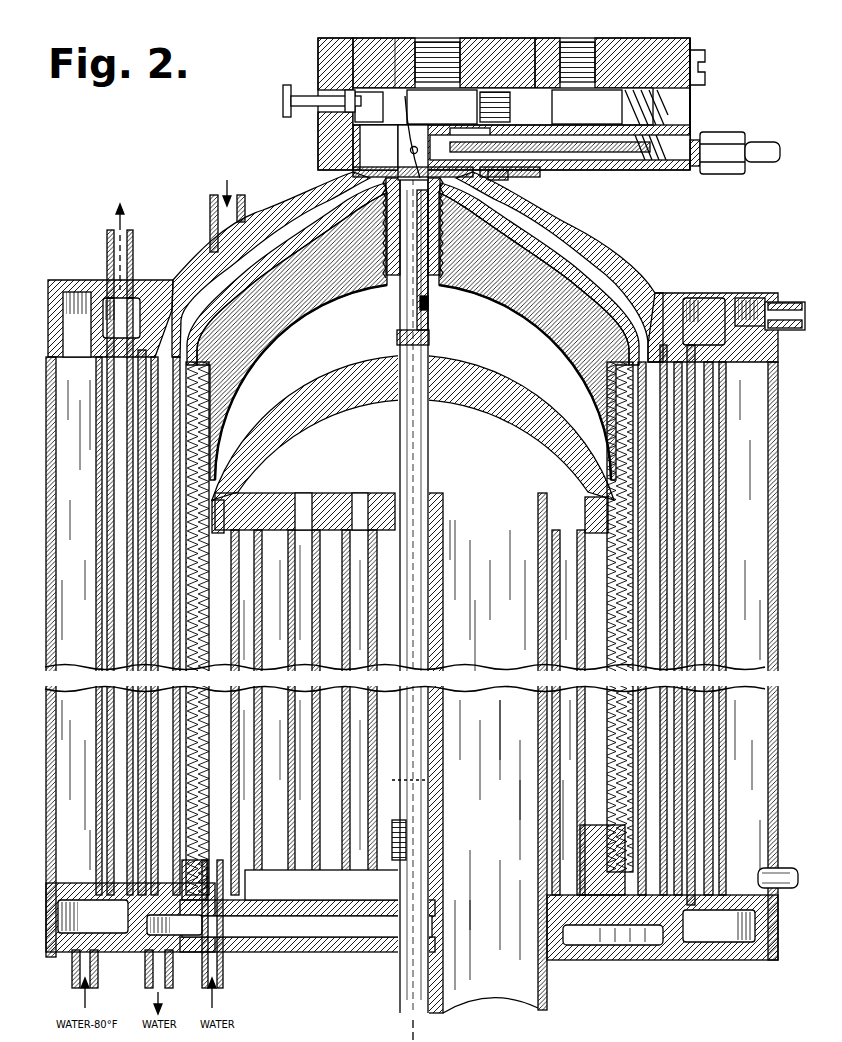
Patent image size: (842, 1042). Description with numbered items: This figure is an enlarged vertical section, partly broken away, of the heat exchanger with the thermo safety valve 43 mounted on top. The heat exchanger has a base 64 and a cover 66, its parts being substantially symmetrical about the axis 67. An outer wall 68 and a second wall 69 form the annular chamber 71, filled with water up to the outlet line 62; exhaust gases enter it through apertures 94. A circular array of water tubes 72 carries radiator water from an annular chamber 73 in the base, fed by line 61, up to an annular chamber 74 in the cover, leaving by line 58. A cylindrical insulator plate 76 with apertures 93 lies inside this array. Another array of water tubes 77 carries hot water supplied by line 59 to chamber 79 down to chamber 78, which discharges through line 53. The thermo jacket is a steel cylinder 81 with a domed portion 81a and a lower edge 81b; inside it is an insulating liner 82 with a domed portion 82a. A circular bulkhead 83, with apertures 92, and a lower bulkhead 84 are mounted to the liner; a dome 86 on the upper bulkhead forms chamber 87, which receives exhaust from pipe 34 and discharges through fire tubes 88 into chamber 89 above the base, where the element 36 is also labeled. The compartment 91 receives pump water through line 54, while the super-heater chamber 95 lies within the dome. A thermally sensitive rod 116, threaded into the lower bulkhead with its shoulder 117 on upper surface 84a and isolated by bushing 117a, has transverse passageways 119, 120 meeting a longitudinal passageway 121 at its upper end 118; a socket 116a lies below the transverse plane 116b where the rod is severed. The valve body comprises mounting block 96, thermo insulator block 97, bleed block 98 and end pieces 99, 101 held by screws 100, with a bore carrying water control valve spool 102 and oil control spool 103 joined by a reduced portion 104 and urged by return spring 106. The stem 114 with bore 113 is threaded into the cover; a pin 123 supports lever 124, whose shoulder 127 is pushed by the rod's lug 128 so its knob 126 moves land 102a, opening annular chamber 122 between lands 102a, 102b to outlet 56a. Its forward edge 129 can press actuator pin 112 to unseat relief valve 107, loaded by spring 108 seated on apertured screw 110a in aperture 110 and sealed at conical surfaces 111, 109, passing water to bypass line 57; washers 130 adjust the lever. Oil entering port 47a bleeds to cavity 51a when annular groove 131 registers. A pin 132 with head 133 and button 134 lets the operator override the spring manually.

The thermo safety valve 43 is at (519, 445).
The end piece 99 is at (330, 38).
The mounting block 96 is at (372, 38).
The annular chamber 122 is at (395, 38).
The threaded outlet 56a is at (440, 42).
The water control valve spool 102 is at (453, 92).
The thermo insulator block 97 is at (484, 38).
The portion of reduced diameter 104 is at (545, 50).
The annular groove 131 is at (532, 92).
The threaded port 47a is at (590, 60).
The oil control spool 103 is at (594, 100).
The bleed block 98 is at (628, 38).
The end piece 101 is at (688, 42).
The screws 100 is at (706, 62).
The return spring 106 is at (666, 106).
The thermo safety bypass line 57 is at (768, 142).
The head 133 is at (310, 94).
The pin 132 is at (300, 98).
The button 134 is at (283, 100).
The land 102b is at (367, 106).
The land 102a is at (442, 107).
The forward edge 129 is at (415, 128).
The conical surface 109 is at (462, 135).
The spring 108 is at (495, 110).
The cavity 51a is at (587, 107).
The knob 126 is at (355, 130).
The lever 124 is at (335, 141).
The actuator pin 112 is at (379, 147).
The conical surface 111 is at (378, 153).
The shoulder 127 is at (353, 176).
The upstanding lug 128 is at (302, 195).
The relief valve 107 is at (486, 178).
The washers 130 is at (500, 180).
The apertured screw 110a is at (612, 160).
The internally threaded aperture 110 is at (650, 160).
The upper end of the rod 118 is at (385, 218).
The transverse plane 116b is at (370, 238).
The pin 123 is at (443, 218).
The bore 113 is at (445, 238).
The stem 114 is at (443, 262).
The domed portion 81a is at (250, 274).
The chamber 79 is at (200, 295).
The thermally sensitive rod 116 is at (398, 292).
The longitudinal passageway 121 is at (430, 300).
The transverse passageway 119 is at (430, 330).
The hexagonal wrench receiving socket 116a is at (440, 280).
The domed portion 82a is at (303, 310).
The super-heater chamber 95 is at (494, 339).
The water tubes 77 is at (178, 352).
The dome 86 is at (322, 418).
The chamber 87 is at (487, 701).
The bushing 117a is at (445, 478).
The circular bulkhead 83 is at (278, 490).
The apertures 92 is at (222, 533).
The compartment 91 is at (274, 624).
The cover 66 is at (58, 280).
The line 58 is at (137, 245).
The line 59 is at (210, 216).
The outlet line 62 is at (784, 302).
The annular chamber 74 is at (414, 321).
The apertures 93 is at (142, 383).
The cylindrical insulator plate 76 is at (127, 408).
The water tubes 72 is at (96, 470).
The annular chamber 71 is at (76, 510).
The outer wall 68 is at (46, 738).
The second wall 69 is at (92, 777).
The apertures 94 is at (92, 843).
The fire tubes 88 is at (258, 770).
The transverse passageway 120 is at (415, 780).
The upper surface 84a is at (443, 805).
The shoulder 117 is at (398, 820).
The lower edge 81b is at (210, 877).
The lower bulkhead 84 is at (300, 873).
The chamber 89 is at (323, 885).
The annular chamber 73 is at (406, 921).
The base 64 is at (46, 950).
The line 61 is at (98, 968).
The line 53 is at (173, 962).
The line 54 is at (224, 970).
The base 36 is at (290, 953).
The chamber 78 is at (338, 935).
The axis 67 is at (410, 1028).
The pipe 34 is at (430, 1000).
The steel cylinder 81 is at (211, 418).
The insulating liner 82 is at (206, 442).